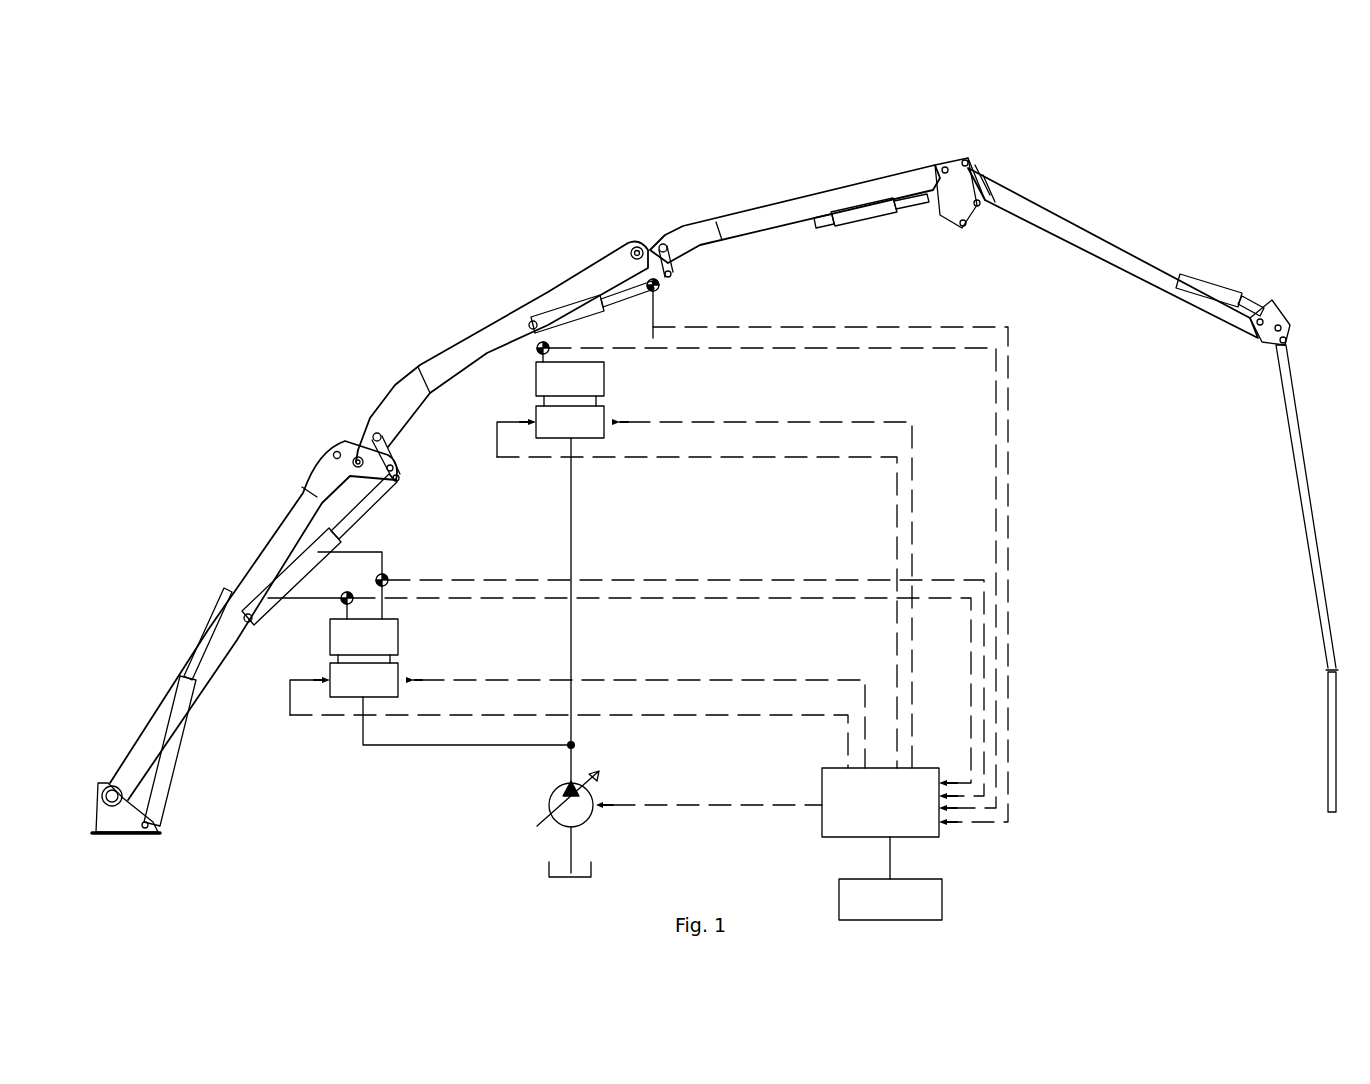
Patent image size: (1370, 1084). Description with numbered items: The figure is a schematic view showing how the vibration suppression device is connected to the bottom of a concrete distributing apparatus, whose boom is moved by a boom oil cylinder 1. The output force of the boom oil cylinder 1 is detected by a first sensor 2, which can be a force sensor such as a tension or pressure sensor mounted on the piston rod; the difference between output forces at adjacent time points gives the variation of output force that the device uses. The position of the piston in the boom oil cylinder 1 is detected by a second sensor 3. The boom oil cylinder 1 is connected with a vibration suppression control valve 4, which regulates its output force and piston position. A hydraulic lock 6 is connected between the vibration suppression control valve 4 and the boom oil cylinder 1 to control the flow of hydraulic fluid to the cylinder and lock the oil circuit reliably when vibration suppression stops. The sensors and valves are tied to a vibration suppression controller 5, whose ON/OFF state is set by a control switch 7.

The boom oil cylinder 1 is at (159, 797).
The first sensor 2 is at (548, 346).
The second sensor 3 is at (385, 576).
The vibration suppression control valve 4 is at (467, 548).
The vibration suppression controller 5 is at (880, 802).
The hydraulic lock 6 is at (467, 508).
The control switch 7 is at (890, 880).